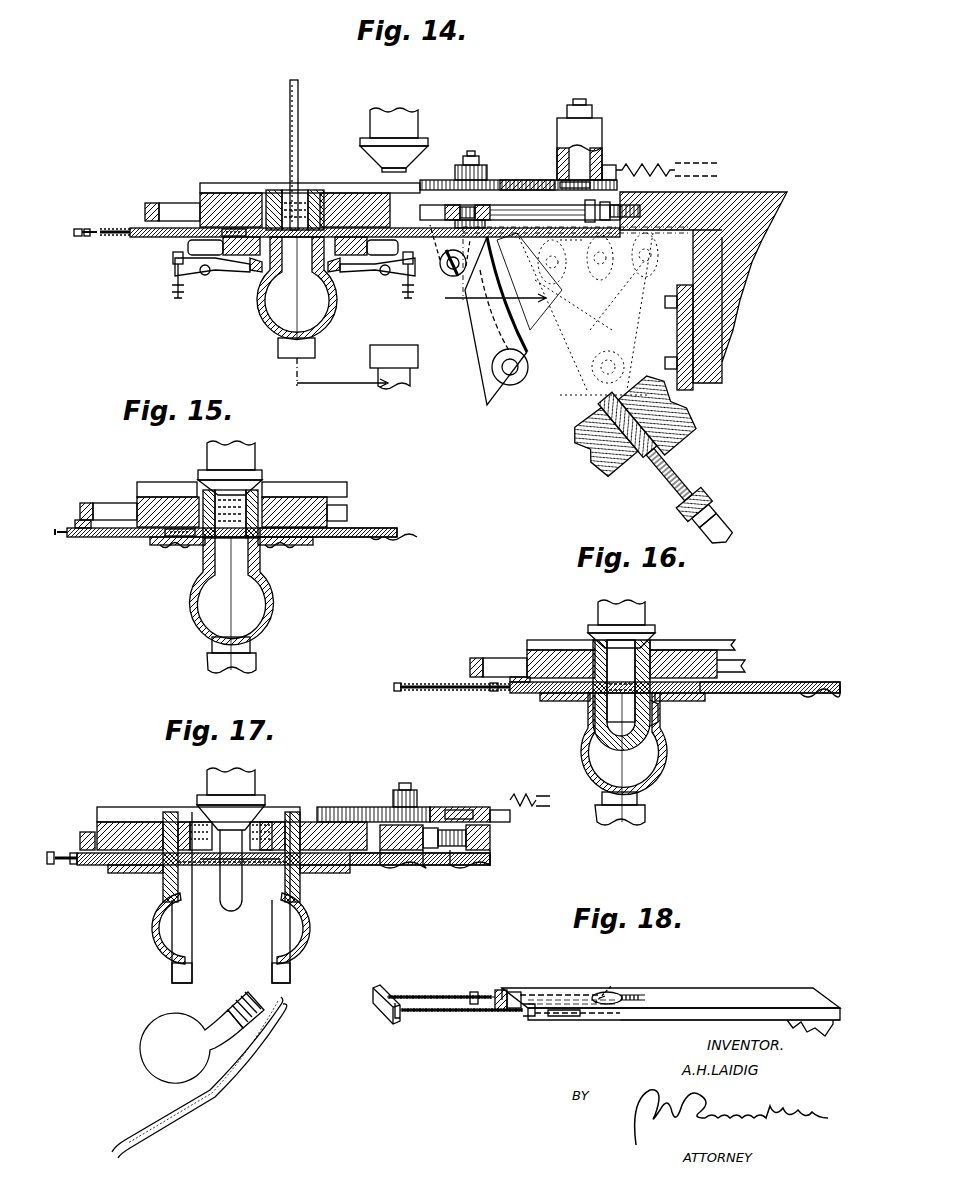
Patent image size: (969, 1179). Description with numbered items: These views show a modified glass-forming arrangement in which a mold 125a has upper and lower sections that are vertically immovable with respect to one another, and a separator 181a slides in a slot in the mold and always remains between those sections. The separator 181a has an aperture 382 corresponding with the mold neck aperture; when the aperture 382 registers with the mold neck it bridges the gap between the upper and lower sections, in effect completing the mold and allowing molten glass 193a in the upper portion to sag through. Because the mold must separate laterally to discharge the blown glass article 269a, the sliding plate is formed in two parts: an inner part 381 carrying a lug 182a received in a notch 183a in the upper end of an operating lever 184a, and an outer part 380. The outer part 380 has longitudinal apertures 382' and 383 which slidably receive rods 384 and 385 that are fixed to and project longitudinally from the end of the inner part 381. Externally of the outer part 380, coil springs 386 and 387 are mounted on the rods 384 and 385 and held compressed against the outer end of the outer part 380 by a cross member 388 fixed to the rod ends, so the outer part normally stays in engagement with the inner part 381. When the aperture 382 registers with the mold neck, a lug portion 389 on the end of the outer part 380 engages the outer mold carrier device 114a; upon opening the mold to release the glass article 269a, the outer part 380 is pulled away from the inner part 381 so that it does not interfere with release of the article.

In FIG. 14, the outer mold carrier device 114a is at (208, 206).
In FIG. 15, the outer mold carrier device 114a is at (150, 506).
In FIG. 16, the outer mold carrier device 114a is at (530, 658).
In FIG. 17, the outer mold carrier device 114a is at (118, 830).
In FIG. 14, the mold 125a is at (258, 312).
In FIG. 14, the separator 181a is at (160, 245).
In FIG. 15, the separator 181a is at (106, 540).
In FIG. 16, the separator 181a is at (532, 697).
In FIG. 17, the separator 181a is at (110, 868).
In FIG. 18, the separator 181a is at (693, 990).
In FIG. 14, the lug 182a is at (448, 276).
In FIG. 14, the notch 183a is at (492, 318).
In FIG. 14, the operating lever 184a is at (510, 330).
In FIG. 15, the molten glass 193a is at (266, 507).
In FIG. 17, the glass article 269a is at (142, 1052).
In FIG. 14, the outer part 380 is at (130, 237).
In FIG. 15, the outer part 380 is at (76, 540).
In FIG. 16, the outer part 380 is at (570, 696).
In FIG. 17, the outer part 380 is at (135, 868).
In FIG. 18, the outer part 380 is at (535, 990).
In FIG. 14, the inner part 381 is at (445, 222).
In FIG. 15, the inner part 381 is at (332, 540).
In FIG. 16, the inner part 381 is at (782, 682).
In FIG. 17, the inner part 381 is at (435, 868).
In FIG. 18, the inner part 381 is at (770, 990).
In FIG. 14, the aperture 382 is at (240, 192).
In FIG. 15, the aperture 382 is at (151, 566).
In FIG. 16, the aperture 382 is at (675, 713).
In FIG. 17, the aperture 382 is at (231, 892).
In FIG. 18, the aperture 382 is at (629, 978).
In FIG. 18, the longitudinal aperture 382' is at (564, 1034).
In FIG. 18, the longitudinal aperture 383 is at (585, 1000).
In FIG. 18, the rod 384 is at (462, 1015).
In FIG. 14, the rod 385 is at (110, 230).
In FIG. 16, the rod 385 is at (432, 684).
In FIG. 17, the rod 385 is at (64, 855).
In FIG. 18, the rod 385 is at (456, 996).
In FIG. 18, the coil spring 386 is at (408, 1018).
In FIG. 14, the coil spring 387 is at (86, 240).
In FIG. 16, the coil spring 387 is at (455, 692).
In FIG. 17, the coil spring 387 is at (72, 866).
In FIG. 18, the coil spring 387 is at (420, 994).
In FIG. 14, the cross member 388 is at (78, 229).
In FIG. 16, the cross member 388 is at (394, 690).
In FIG. 17, the cross member 388 is at (50, 852).
In FIG. 18, the cross member 388 is at (378, 1010).
In FIG. 14, the lug portion 389 is at (148, 226).
In FIG. 15, the lug portion 389 is at (82, 520).
In FIG. 16, the lug portion 389 is at (490, 698).
In FIG. 17, the lug portion 389 is at (88, 832).
In FIG. 18, the lug portion 389 is at (512, 990).